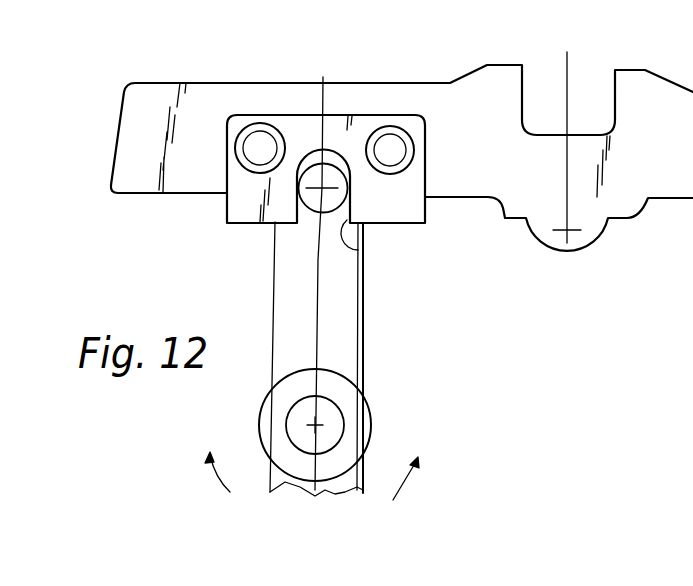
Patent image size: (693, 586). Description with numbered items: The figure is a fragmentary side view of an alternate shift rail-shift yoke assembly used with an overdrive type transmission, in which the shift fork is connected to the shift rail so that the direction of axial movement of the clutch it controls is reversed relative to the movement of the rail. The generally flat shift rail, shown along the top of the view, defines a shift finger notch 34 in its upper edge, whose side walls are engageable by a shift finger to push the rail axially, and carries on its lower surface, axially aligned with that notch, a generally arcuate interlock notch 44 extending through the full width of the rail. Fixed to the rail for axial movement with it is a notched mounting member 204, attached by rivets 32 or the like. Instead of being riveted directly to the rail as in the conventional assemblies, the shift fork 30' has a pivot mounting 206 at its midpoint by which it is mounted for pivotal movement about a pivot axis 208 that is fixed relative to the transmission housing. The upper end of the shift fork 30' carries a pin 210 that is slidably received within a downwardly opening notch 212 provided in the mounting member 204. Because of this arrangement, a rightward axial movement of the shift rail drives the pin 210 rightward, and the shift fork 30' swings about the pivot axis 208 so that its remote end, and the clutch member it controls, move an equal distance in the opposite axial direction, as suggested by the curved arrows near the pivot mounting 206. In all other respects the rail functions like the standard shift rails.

The shift finger notch 34 is at (575, 113).
The interlock notch 44 is at (581, 203).
The notched mounting member 204 is at (335, 135).
The rivets 32 is at (257, 145).
The pin 210 is at (313, 202).
The downwardly opening notch 212 is at (358, 250).
The shift fork 30' is at (318, 288).
The pivot mounting 206 is at (325, 420).
The pivot axis 208 is at (318, 427).